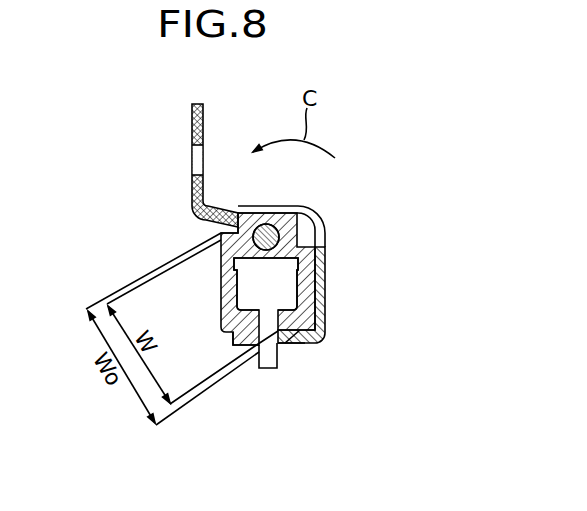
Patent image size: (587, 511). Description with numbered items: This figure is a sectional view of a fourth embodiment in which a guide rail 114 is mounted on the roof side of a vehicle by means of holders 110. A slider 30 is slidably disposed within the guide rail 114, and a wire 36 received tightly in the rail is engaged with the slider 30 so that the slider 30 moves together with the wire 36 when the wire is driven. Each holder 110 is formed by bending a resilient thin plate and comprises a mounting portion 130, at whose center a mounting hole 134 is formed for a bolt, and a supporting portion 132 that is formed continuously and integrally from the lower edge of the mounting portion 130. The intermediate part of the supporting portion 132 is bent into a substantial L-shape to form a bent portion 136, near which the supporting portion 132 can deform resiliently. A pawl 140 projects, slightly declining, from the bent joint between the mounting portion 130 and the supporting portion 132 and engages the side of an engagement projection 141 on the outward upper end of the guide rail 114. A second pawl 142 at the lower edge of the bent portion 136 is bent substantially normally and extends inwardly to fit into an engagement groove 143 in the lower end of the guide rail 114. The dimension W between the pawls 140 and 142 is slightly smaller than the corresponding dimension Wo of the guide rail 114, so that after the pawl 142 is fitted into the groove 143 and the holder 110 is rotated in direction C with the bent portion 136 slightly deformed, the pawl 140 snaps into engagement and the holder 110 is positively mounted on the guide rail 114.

The slider 30 is at (279, 362).
The wire 36 is at (324, 243).
The holder 110 is at (322, 188).
The guide rail 114 is at (221, 300).
The mounting portion 130 is at (184, 121).
The mounting hole 134 is at (203, 152).
The bent portion 136 is at (327, 229).
The supporting portion 132 is at (334, 289).
The pawl 140 is at (226, 227).
The engagement projection 141 is at (273, 222).
The pawl 142 is at (318, 341).
The engagement groove 143 is at (233, 337).